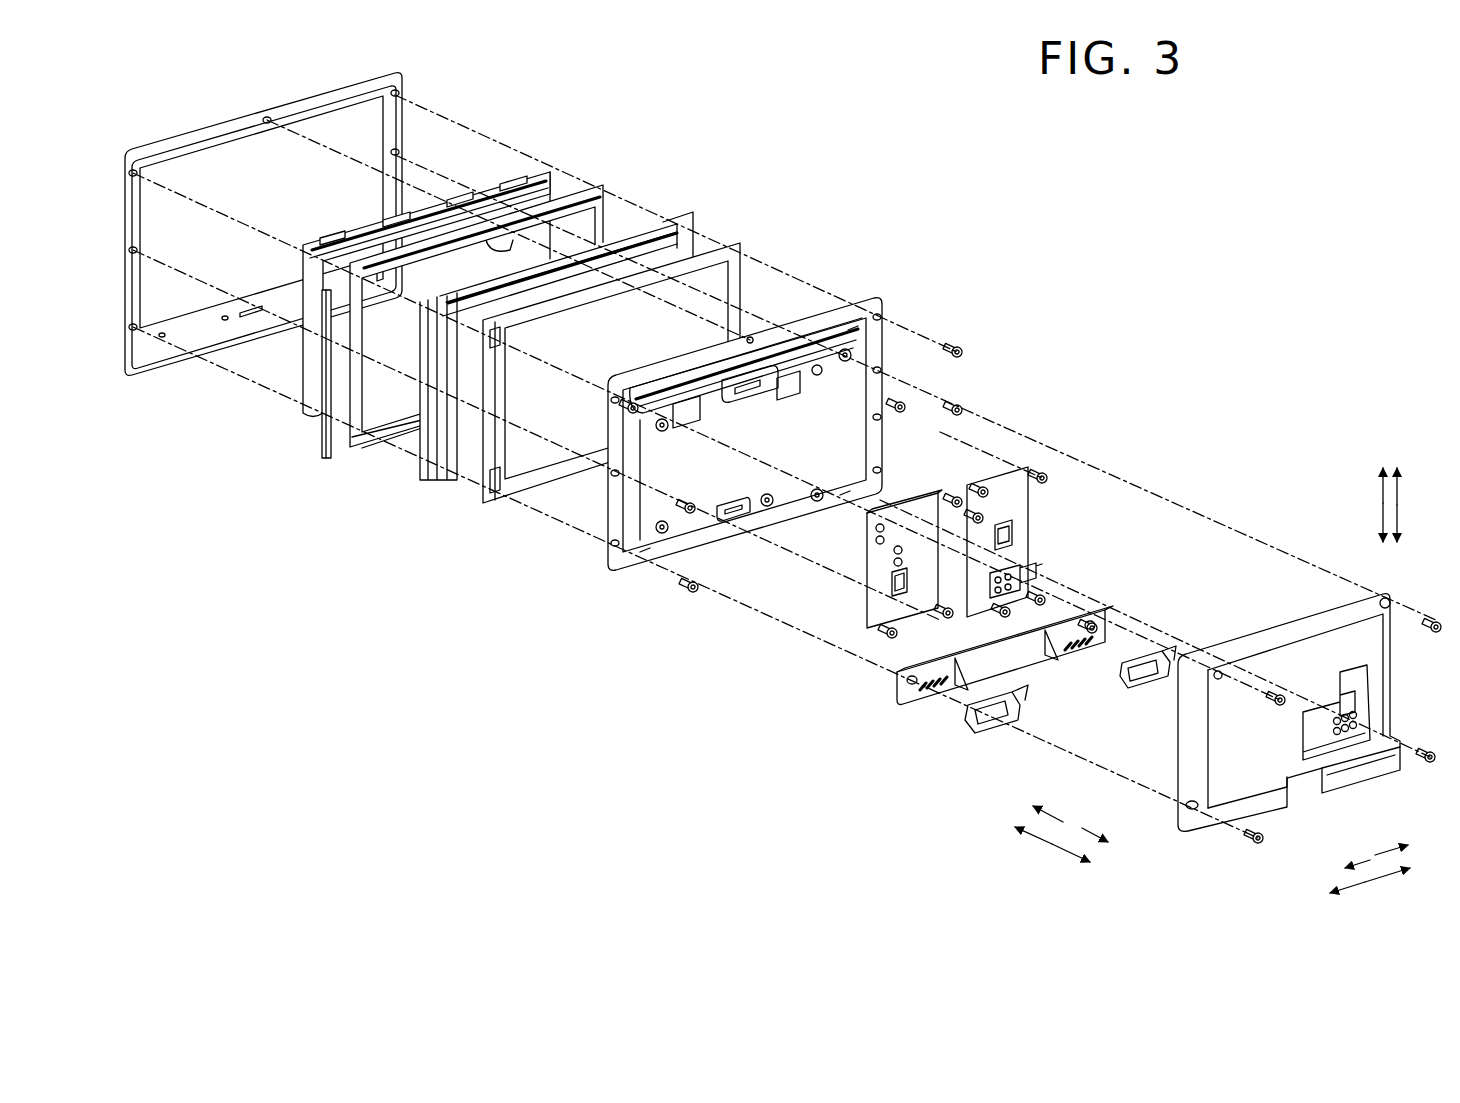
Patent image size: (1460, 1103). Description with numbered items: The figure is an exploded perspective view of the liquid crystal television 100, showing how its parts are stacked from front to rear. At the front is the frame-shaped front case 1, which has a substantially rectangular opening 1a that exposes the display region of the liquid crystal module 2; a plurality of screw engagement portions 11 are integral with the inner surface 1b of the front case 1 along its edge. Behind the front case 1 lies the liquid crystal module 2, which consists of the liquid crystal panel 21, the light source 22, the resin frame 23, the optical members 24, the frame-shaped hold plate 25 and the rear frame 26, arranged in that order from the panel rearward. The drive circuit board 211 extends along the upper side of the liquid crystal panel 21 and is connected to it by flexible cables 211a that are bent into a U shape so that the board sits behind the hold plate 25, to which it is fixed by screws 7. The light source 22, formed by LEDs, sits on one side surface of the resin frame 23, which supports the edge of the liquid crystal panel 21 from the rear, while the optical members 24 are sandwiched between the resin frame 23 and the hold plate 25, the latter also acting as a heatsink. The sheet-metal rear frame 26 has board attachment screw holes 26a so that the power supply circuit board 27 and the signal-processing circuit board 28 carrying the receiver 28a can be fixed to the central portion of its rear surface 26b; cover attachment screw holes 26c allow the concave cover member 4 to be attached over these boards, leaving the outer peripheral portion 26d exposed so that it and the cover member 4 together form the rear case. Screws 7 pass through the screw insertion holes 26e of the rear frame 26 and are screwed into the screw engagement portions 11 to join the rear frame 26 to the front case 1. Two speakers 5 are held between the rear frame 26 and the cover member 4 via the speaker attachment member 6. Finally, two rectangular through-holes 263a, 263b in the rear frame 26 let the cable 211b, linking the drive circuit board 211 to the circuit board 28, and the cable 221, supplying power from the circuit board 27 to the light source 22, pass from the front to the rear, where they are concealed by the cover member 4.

The liquid crystal television 100 is at (1358, 267).
The front case 1 is at (225, 118).
The opening 1a is at (320, 110).
The inner surface 1b is at (197, 138).
The screw engagement portions 11 is at (266, 117).
The liquid crystal module 2 is at (845, 206).
The liquid crystal panel 21 is at (303, 418).
The drive circuit board 211 is at (540, 190).
The flexible cables 211a is at (466, 194).
The cable 211b is at (490, 255).
The cable 221 is at (388, 274).
The light source 22 is at (322, 462).
The resin frame 23 is at (357, 448).
The optical members 24 is at (415, 488).
The hold plate 25 is at (492, 506).
The rear frame 26 is at (620, 575).
The board attachment screw holes 26a is at (662, 532).
The rear surface 26b is at (627, 540).
The cover attachment screw holes 26c is at (645, 552).
The outer peripheral portion 26d is at (609, 505).
The screw insertion holes 26e is at (612, 472).
The through-hole 263a is at (817, 394).
The through-hole 263b is at (698, 422).
The circuit board 27 is at (900, 612).
The circuit board 28 is at (1030, 504).
The receiver 28a is at (1038, 572).
The speaker attachment member 6 is at (1075, 628).
The speakers 5 is at (993, 727).
The cover member 4 is at (1318, 632).
The screws 7 is at (690, 592).